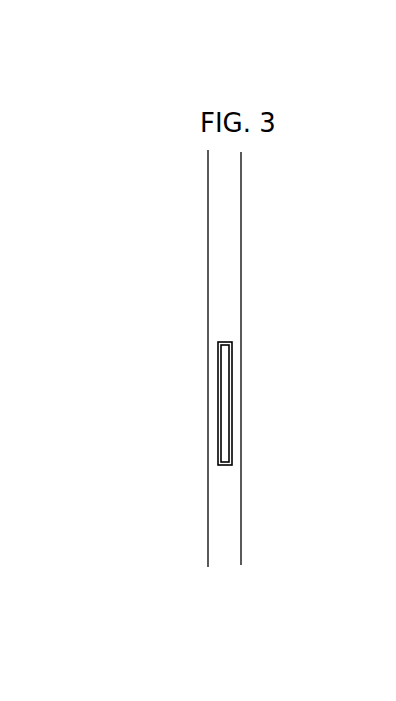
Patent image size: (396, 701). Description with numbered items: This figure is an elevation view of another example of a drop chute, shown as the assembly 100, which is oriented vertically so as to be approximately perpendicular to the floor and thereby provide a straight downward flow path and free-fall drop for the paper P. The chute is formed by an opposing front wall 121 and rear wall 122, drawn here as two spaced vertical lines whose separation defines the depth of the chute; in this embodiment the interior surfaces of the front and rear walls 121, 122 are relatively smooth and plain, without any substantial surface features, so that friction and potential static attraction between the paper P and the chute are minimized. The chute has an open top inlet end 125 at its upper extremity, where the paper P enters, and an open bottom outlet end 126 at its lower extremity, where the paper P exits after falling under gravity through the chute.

The device 100 is at (152, 172).
The front wall 121 is at (208, 227).
The rear wall 122 is at (241, 263).
The open top inlet end 125 is at (241, 150).
The open bottom outlet end 126 is at (225, 565).
The paper P is at (218, 370).